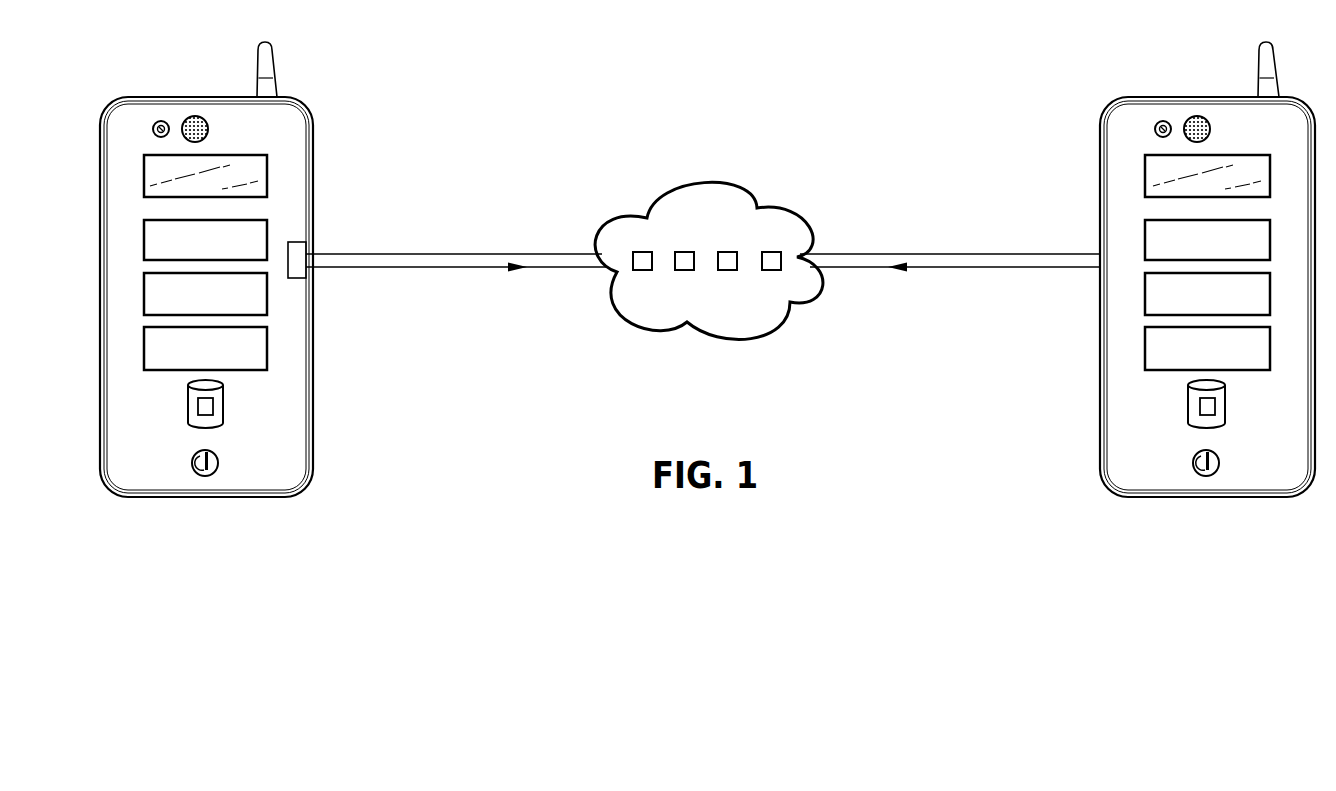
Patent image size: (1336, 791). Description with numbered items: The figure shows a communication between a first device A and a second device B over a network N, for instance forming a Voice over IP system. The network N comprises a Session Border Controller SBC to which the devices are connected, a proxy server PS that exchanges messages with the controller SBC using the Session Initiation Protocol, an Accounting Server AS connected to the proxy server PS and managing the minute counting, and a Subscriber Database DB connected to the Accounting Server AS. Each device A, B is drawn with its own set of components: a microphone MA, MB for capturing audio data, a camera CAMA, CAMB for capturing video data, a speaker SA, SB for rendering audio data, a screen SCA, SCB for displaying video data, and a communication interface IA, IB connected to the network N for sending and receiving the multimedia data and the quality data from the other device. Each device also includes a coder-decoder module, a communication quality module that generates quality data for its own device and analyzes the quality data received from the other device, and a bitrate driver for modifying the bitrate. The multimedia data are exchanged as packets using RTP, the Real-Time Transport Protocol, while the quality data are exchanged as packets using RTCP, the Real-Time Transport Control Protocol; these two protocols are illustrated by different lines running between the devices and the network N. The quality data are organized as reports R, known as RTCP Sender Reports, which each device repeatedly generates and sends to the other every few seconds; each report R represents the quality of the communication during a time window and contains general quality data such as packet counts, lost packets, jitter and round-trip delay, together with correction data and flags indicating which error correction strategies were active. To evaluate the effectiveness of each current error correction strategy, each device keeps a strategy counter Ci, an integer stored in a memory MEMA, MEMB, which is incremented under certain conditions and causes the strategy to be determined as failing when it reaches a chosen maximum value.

The first device A is at (206, 286).
The second device B is at (1207, 286).
The camera CAMA is at (160, 123).
The camera CAMB is at (1160, 123).
The speaker SA is at (197, 119).
The speaker SB is at (1203, 120).
The screen SCA is at (267, 168).
The screen SCB is at (1145, 168).
The communication interface IA is at (306, 247).
The communication interface IB is at (1107, 247).
The memory MEMA is at (225, 413).
The memory MEMB is at (1188, 413).
The strategy counter Ci is at (213, 405).
The microphone MA is at (200, 474).
The microphone MB is at (1213, 475).
The Real-Time Transport Protocol RTP is at (435, 253).
The Real-Time Transport Control Protocol RTCP is at (372, 268).
The report R is at (707, 296).
The network N is at (709, 277).
The Session Border Controller SBC is at (642, 270).
The proxy server PS is at (687, 270).
The Accounting Server AS is at (725, 270).
The Subscriber Database DB is at (772, 270).